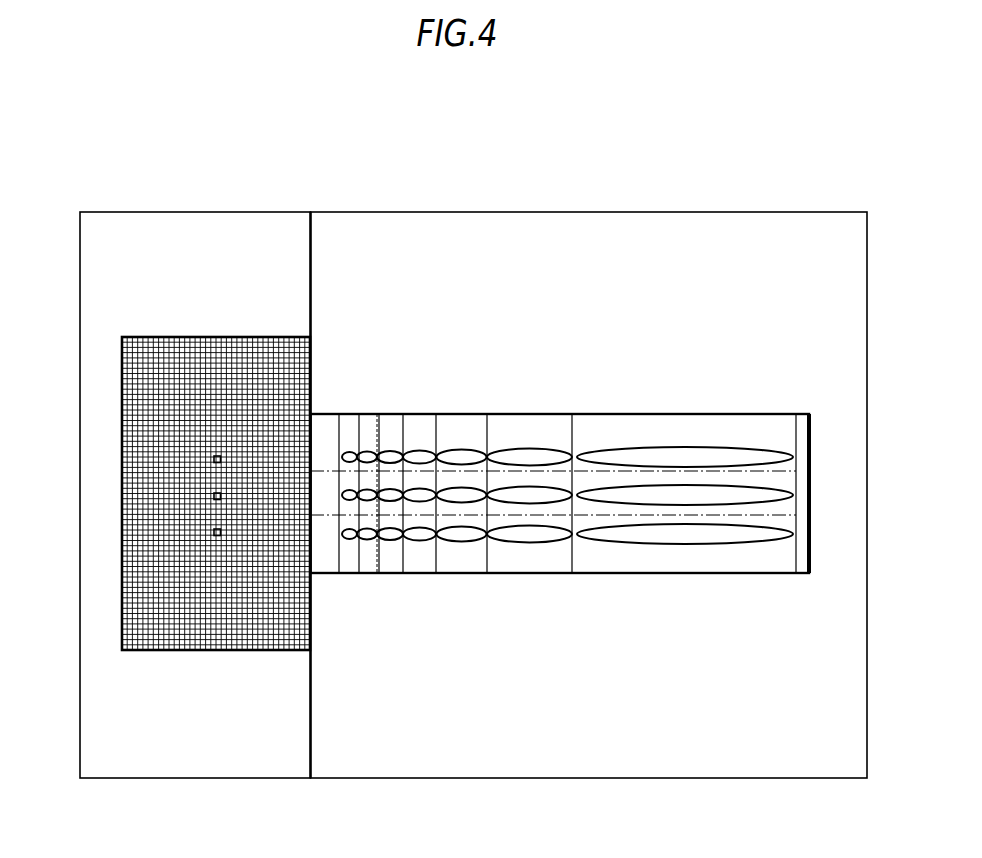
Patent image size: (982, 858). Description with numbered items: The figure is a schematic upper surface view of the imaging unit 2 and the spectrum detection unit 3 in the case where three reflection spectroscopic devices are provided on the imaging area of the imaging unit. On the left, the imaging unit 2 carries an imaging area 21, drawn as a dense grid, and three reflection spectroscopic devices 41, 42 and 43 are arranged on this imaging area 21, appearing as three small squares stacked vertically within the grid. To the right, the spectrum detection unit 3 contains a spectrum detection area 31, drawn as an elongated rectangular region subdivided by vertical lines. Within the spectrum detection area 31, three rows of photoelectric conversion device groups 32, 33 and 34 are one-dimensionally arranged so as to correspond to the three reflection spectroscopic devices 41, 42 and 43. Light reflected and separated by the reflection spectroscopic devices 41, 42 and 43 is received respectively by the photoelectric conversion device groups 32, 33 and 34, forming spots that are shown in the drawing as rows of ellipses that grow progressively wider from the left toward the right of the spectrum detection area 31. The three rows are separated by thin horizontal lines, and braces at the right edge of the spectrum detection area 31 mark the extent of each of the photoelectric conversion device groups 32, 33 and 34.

The imaging unit 2 is at (191, 778).
The imaging area 21 is at (153, 650).
The spectrum detection unit 3 is at (536, 778).
The spectrum detection area 31 is at (457, 573).
The photoelectric conversion device group 32 is at (817, 414).
The photoelectric conversion device group 33 is at (817, 471).
The photoelectric conversion device group 34 is at (817, 516).
The reflection spectroscopic device 41 is at (212, 459).
The reflection spectroscopic device 42 is at (212, 496).
The reflection spectroscopic device 43 is at (212, 532).